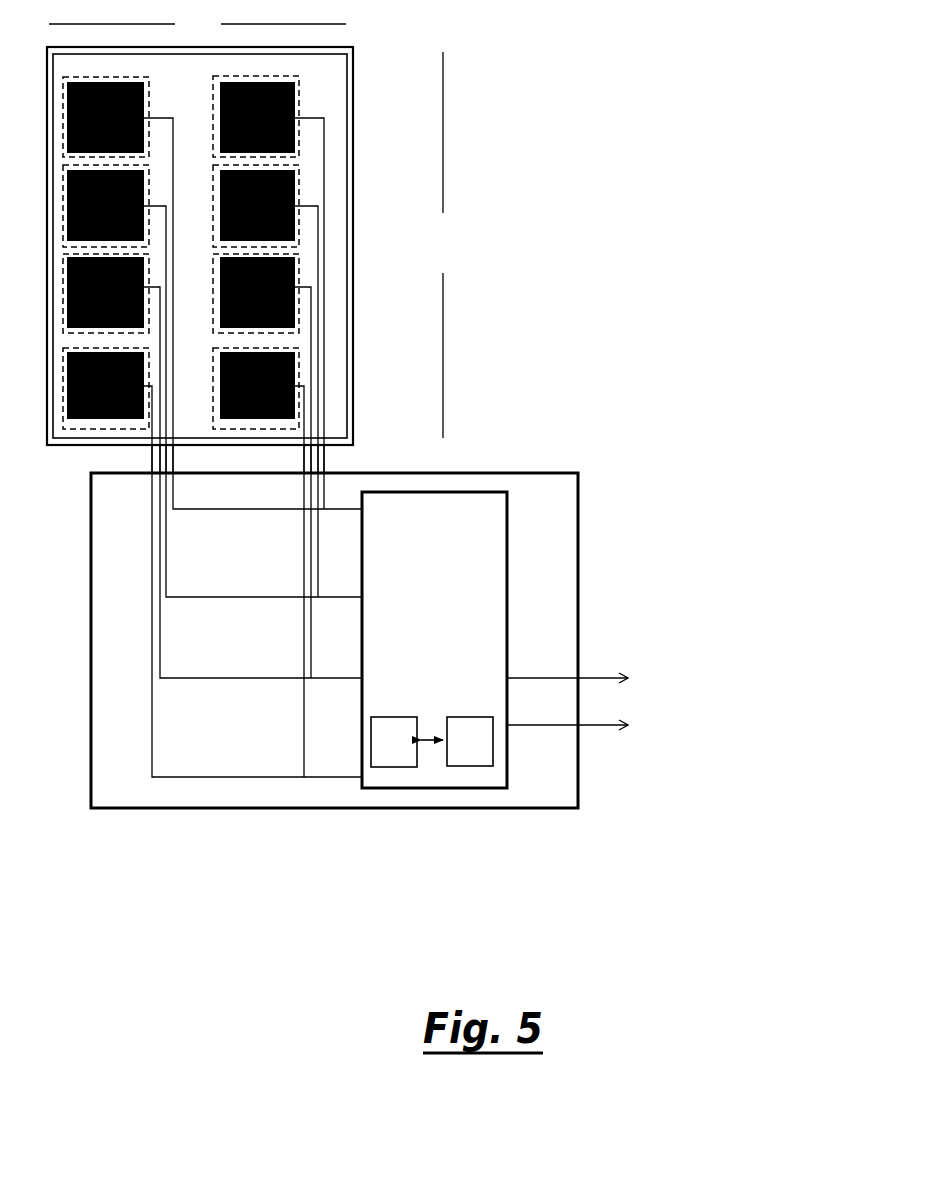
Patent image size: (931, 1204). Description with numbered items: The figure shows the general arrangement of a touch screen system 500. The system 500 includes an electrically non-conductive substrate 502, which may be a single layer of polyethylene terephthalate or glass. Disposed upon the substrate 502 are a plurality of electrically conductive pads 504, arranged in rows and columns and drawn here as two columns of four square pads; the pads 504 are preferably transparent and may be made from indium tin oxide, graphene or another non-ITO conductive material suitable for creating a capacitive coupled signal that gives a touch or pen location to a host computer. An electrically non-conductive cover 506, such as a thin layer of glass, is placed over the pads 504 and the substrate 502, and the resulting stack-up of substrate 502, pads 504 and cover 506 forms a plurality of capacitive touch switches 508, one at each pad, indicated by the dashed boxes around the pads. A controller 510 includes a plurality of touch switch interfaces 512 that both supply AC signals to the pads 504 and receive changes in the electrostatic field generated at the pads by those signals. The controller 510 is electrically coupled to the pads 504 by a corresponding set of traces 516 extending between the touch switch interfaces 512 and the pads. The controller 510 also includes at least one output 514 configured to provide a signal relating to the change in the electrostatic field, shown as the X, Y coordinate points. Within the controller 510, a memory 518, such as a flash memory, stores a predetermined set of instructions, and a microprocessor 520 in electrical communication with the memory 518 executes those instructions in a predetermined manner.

The touch screen system 500 is at (452, 411).
The electrically non-conductive substrate 502 is at (353, 75).
The electrically conductive pads 504 is at (146, 88).
The electrically non-conductive cover 506 is at (347, 155).
The capacitive touch switches 508 is at (212, 183).
The controller 510 is at (507, 537).
The touch switch interfaces 512 is at (354, 518).
The output 514 is at (654, 642).
The traces 516 is at (138, 457).
The memory 518 is at (398, 715).
The microprocessor 520 is at (478, 715).